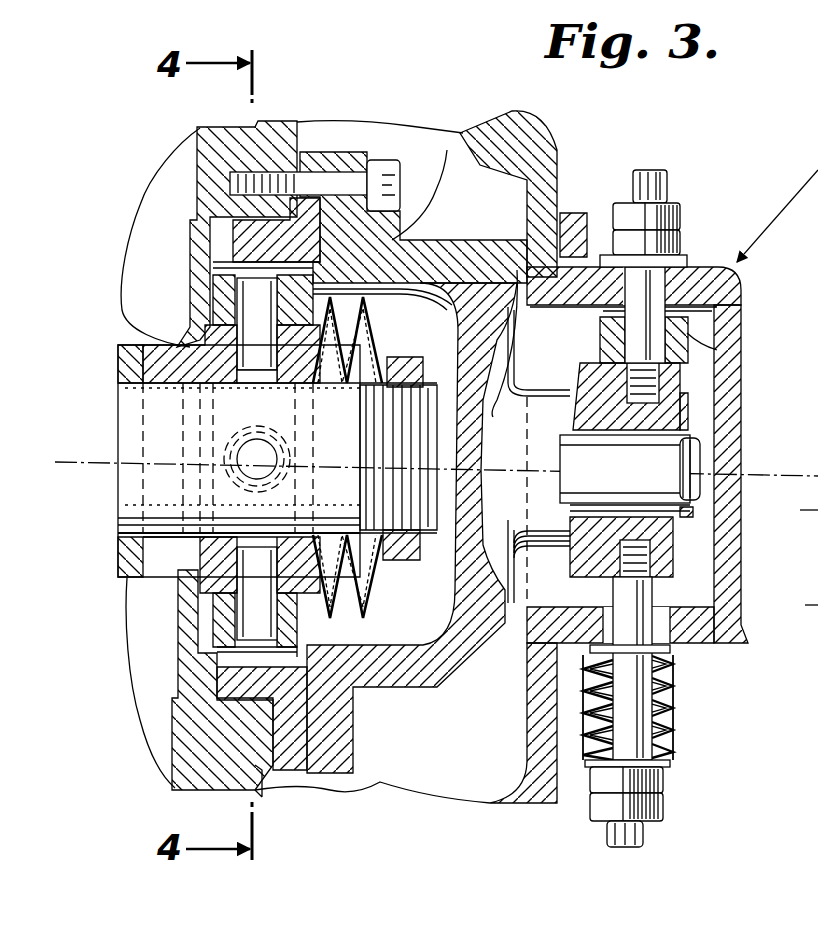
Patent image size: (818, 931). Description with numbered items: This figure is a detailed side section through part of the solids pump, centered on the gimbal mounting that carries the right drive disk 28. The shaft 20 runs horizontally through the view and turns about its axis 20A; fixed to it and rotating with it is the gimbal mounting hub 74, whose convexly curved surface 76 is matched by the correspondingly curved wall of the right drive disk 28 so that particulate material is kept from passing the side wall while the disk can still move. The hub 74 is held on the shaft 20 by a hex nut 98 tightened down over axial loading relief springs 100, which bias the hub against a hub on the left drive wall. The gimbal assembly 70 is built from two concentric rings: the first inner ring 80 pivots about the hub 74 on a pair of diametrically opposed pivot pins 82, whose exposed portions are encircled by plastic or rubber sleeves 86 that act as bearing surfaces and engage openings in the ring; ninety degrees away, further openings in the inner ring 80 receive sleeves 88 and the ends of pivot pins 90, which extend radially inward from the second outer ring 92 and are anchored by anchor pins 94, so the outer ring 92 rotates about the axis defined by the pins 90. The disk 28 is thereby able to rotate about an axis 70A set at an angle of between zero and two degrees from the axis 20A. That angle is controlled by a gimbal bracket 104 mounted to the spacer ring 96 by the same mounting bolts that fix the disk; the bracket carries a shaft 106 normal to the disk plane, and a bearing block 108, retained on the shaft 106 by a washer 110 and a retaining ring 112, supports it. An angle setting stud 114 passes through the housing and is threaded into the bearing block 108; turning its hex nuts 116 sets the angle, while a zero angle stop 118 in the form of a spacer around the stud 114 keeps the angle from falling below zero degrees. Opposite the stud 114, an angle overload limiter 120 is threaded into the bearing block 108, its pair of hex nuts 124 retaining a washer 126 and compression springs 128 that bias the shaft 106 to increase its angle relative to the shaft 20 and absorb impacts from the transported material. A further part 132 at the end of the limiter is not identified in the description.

The shaft 20 is at (133, 418).
The axis 20A is at (68, 473).
The right drive disk 28 is at (260, 796).
The gimbal assembly 70 is at (420, 160).
The axis 70A is at (798, 478).
The gimbal mounting hub 74 is at (318, 345).
The convexly curved surface 76 is at (122, 306).
The first inner ring 80 is at (257, 293).
The pivot pins 82 is at (212, 288).
The sleeves 86 is at (217, 320).
The sleeves 88 is at (287, 440).
The pivot pins 90 is at (250, 467).
The second outer ring 92 is at (307, 150).
The anchor pins 94 is at (804, 523).
The spacer ring 96 is at (807, 622).
The hex nut 98 is at (531, 436).
The axial loading relief springs 100 is at (368, 596).
The gimbal bracket 104 is at (393, 238).
The shaft 106 is at (593, 440).
The bearing block 108 is at (690, 377).
The washer 110 is at (690, 583).
The retaining ring 112 is at (690, 500).
The angle setting stud 114 is at (628, 200).
The hex nuts 116 is at (675, 250).
The zero angle stop 118 is at (740, 305).
The angle overload limiter 120 is at (663, 840).
The hex nuts 124 is at (667, 807).
The washer 126 is at (667, 762).
The compression springs 128 is at (585, 690).
The stud end 132 is at (607, 833).